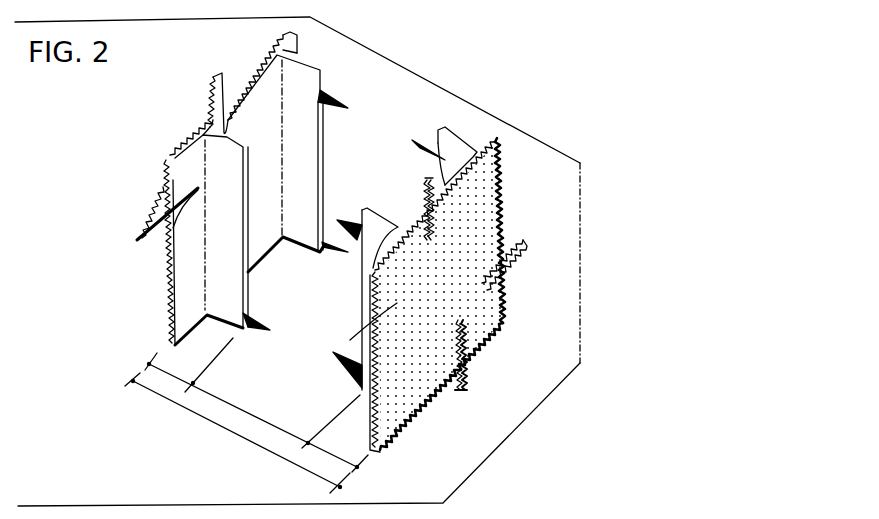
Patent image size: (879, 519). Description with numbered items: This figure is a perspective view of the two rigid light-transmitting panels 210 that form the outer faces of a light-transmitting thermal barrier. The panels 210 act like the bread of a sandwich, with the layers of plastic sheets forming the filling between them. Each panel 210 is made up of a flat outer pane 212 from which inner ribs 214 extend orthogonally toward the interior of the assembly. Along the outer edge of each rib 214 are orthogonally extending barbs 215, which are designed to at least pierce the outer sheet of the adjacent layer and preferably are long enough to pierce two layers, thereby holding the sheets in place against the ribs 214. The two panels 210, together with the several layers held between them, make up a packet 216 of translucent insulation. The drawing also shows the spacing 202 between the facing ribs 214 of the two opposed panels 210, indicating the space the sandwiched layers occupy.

The outer pane 212 is at (160, 178).
The inner rib 214 is at (218, 155).
The barb 215 is at (256, 200).
The translucent panel 210 is at (149, 364).
The packet 216 is at (133, 381).
The spacing between plates 202 is at (250, 413).